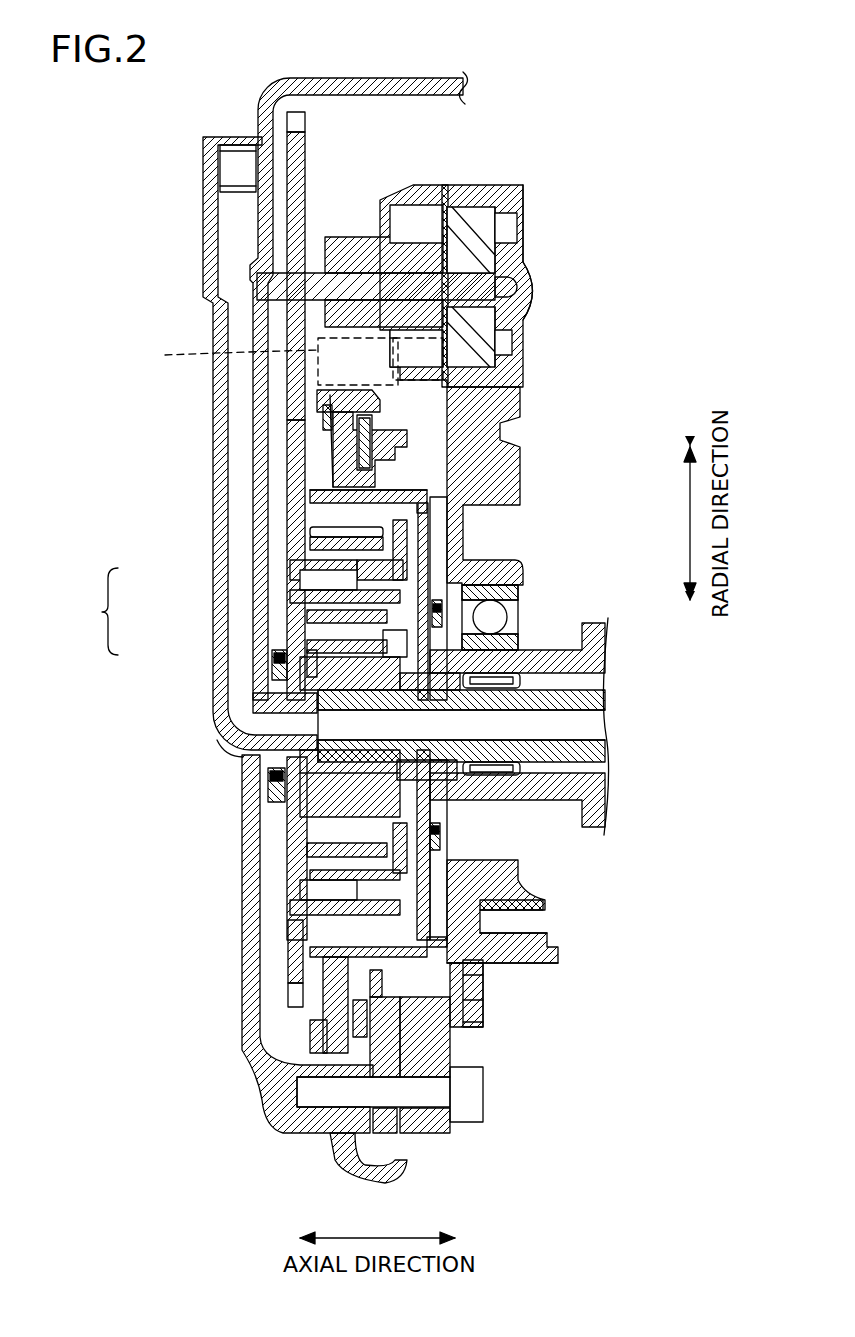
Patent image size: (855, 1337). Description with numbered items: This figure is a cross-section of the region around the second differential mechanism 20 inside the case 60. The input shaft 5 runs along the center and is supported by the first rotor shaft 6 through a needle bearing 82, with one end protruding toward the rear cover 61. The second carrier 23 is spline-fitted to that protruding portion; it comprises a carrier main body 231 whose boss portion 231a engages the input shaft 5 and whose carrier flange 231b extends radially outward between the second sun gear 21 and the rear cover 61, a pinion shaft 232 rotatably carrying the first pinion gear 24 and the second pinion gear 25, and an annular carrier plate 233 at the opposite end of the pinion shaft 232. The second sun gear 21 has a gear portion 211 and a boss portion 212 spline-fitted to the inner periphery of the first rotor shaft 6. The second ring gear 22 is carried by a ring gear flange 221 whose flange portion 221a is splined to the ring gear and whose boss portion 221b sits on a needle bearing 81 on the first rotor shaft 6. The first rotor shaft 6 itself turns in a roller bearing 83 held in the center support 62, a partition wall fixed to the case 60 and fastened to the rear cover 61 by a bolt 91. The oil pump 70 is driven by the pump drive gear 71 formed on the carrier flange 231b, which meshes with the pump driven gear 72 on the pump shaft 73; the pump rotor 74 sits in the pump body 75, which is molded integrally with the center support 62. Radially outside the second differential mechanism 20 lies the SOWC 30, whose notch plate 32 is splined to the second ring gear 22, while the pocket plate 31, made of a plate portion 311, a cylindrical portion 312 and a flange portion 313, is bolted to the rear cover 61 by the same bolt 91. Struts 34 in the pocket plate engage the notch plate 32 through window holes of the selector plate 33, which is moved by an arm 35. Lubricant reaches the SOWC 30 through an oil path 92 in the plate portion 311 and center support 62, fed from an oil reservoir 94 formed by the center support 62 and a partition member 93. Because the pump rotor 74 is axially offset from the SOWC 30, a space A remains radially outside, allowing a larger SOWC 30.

The input shaft 5 is at (560, 700).
The first rotor shaft 6 is at (575, 660).
The second differential mechanism 20 is at (426, 488).
The second sun gear 21 is at (287, 665).
The second ring gear 22 is at (313, 498).
The second carrier 23 is at (96, 611).
The first pinion gear 24 is at (313, 548).
The second pinion gear 25 is at (310, 857).
The SOWC 30 is at (312, 430).
The pocket plate 31 is at (404, 440).
The notch plate 32 is at (388, 460).
The selector plate 33 is at (382, 398).
The struts 34 is at (400, 423).
The arm 35 is at (330, 1015).
The case 60 is at (428, 72).
The rear cover 61 is at (215, 700).
The center support 62 is at (478, 512).
The oil pump 70 is at (504, 145).
The pump drive gear 71 is at (300, 470).
The pump driven gear 72 is at (305, 130).
The pump shaft 73 is at (340, 275).
The pump rotor 74 is at (492, 227).
The pump body 75 is at (540, 290).
The needle bearing 81 is at (470, 645).
The needle bearing 82 is at (500, 682).
The roller bearing 83 is at (520, 595).
The bolt 91 is at (485, 1100).
The oil path 92 is at (470, 1000).
The partition member 93 is at (470, 1022).
The oil reservoir 94 is at (470, 975).
The gear portion 211 is at (275, 790).
The boss portion 212 is at (560, 790).
The ring gear flange 221 is at (445, 535).
The flange portion 221a is at (500, 950).
The boss portion 221b is at (530, 905).
The carrier main body 231 is at (315, 645).
The boss portion 231a is at (300, 760).
The carrier flange 231b is at (300, 828).
The pinion shaft 232 is at (312, 590).
The carrier plate 233 is at (313, 615).
The plate portion 311 is at (398, 1050).
The cylindrical portion 312 is at (332, 1070).
The flange portion 313 is at (388, 1135).
The space A is at (293, 361).